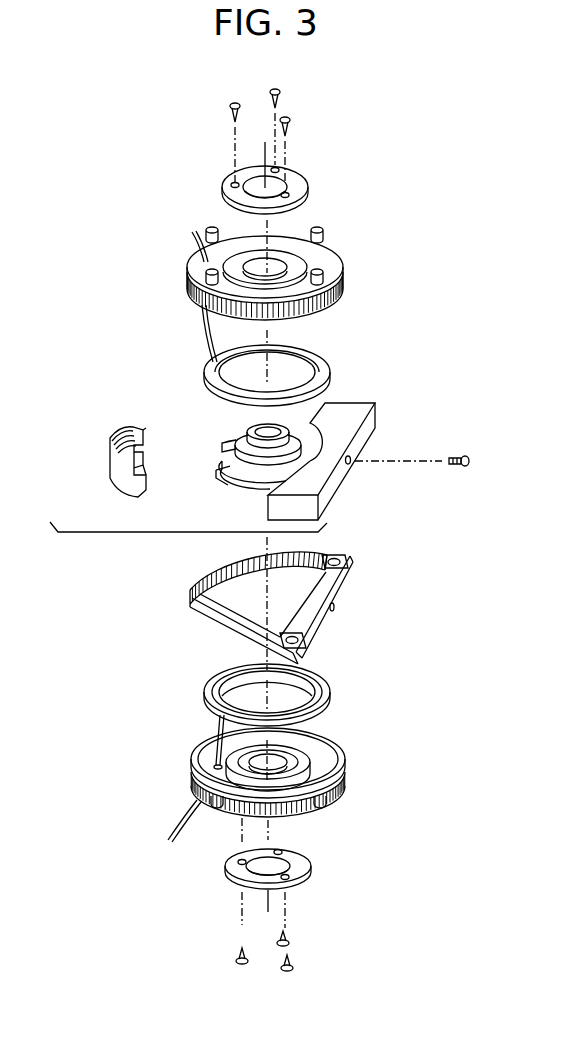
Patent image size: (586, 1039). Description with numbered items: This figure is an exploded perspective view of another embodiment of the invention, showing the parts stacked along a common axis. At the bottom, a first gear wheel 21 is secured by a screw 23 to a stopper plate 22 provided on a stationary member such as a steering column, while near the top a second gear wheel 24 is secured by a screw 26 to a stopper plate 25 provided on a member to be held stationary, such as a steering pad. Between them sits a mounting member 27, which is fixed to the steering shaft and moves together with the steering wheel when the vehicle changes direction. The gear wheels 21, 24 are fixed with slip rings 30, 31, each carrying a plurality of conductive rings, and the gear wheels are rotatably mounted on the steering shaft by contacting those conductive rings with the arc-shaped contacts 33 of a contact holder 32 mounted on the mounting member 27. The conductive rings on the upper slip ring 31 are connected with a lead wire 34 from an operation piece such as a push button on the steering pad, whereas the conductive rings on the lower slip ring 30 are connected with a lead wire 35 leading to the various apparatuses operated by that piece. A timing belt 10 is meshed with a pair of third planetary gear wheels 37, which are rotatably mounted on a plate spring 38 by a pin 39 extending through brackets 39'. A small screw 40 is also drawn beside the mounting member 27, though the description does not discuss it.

The timing belt 10 is at (210, 620).
The first gear wheel 21 is at (345, 787).
The stopper plate 22 is at (311, 867).
The screw 23 is at (290, 943).
The second gear wheel 24 is at (328, 263).
The stopper plate 25 is at (300, 186).
The screw 26 is at (290, 118).
The mounting member 27 is at (348, 422).
The slip ring 30 is at (330, 693).
The slip ring 31 is at (323, 368).
The contact holder 32 is at (118, 478).
The arc-shaped contacts 33 is at (112, 438).
The lead wire 34 is at (200, 340).
The lead wire 35 is at (215, 728).
The third planetary gear wheels 37 is at (322, 553).
The plate spring 38 is at (342, 592).
The pin 39 is at (352, 599).
The brackets 39' is at (352, 595).
The set screw 40 is at (472, 460).